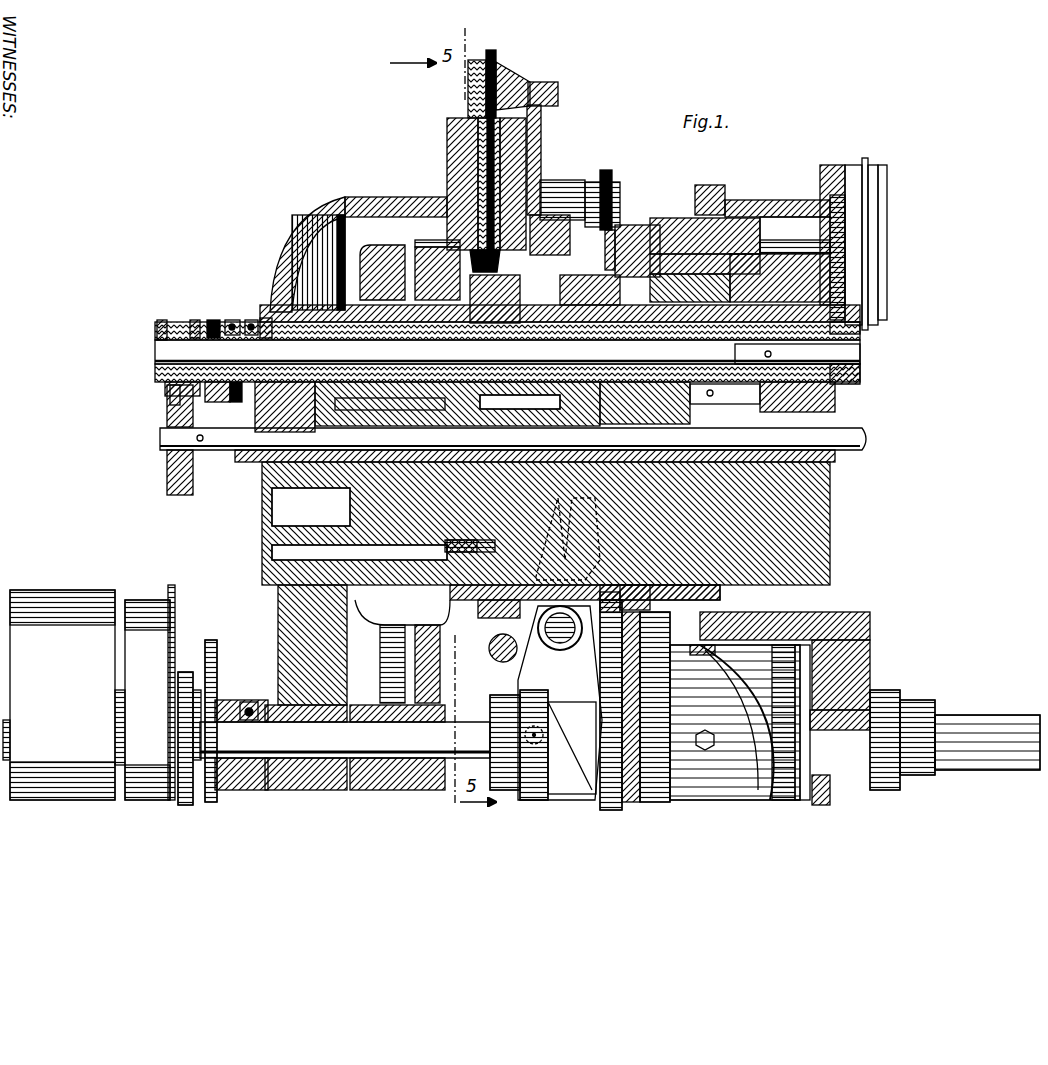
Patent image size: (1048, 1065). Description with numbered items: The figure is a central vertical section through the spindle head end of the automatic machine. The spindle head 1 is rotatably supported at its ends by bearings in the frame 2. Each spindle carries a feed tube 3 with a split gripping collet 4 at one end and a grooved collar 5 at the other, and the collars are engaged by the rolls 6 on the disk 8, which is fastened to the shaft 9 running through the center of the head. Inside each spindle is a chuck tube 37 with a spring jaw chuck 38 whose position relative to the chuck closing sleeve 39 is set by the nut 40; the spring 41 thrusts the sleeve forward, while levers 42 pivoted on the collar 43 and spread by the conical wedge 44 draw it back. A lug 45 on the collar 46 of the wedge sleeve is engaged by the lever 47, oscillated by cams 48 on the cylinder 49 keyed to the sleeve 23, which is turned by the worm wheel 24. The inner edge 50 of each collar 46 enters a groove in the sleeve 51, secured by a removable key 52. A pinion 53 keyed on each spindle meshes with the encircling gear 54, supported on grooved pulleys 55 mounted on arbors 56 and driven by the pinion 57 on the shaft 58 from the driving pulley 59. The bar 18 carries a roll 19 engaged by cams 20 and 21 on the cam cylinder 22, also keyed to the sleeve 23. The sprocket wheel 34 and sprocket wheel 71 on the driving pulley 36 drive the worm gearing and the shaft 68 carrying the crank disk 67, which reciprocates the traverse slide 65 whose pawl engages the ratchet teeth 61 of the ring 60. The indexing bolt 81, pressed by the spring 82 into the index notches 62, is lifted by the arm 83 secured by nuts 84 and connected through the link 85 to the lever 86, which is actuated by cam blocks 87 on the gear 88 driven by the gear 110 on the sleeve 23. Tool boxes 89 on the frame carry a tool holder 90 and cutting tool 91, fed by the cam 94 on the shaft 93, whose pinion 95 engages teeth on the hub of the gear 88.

The spindle head 1 is at (815, 520).
The frame 2 is at (300, 240).
The feed tube 3 is at (155, 354).
The split gripping collet 4 is at (840, 390).
The grooved collar 5 is at (190, 320).
The rolls 6 is at (165, 388).
The disk 8 is at (167, 470).
The shaft 9 is at (162, 438).
The bar 18 is at (855, 612).
The roll 19 is at (695, 670).
The cam 20 is at (701, 727).
The cam 21 is at (781, 722).
The cam cylinder 22 is at (737, 722).
The sleeve 23 is at (940, 712).
The worm wheel 24 is at (660, 610).
The sprocket wheel 34 is at (212, 642).
The driving pulley 36 is at (142, 700).
The chuck tube 37 is at (213, 318).
The spring jaw chuck 38 is at (860, 354).
The chuck closing sleeve 39 is at (862, 372).
The nut 40 is at (232, 318).
The spring 41 is at (655, 300).
The levers 42 is at (690, 300).
The collar 43 is at (700, 395).
The conical wedge 44 is at (685, 410).
The lug 45 is at (575, 272).
The collar 46 is at (575, 300).
The lever 47 is at (560, 619).
The cams 48 is at (572, 748).
The cylinder 49 is at (560, 703).
The inner edge 50 is at (608, 465).
The sleeve 51 is at (540, 520).
The removable key 52 is at (255, 410).
The pinion 53 is at (372, 258).
The gear 54 is at (420, 250).
The grooved pulleys 55 is at (350, 500).
The arbors 56 is at (330, 540).
The pinion 57 is at (380, 670).
The shaft 58 is at (262, 700).
The driving pulley 59 is at (59, 695).
The ring 60 is at (492, 598).
The ratchet teeth 61 is at (503, 644).
The index notches 62 is at (490, 652).
The traverse slide 65 is at (492, 680).
The crank disk 67 is at (612, 592).
The shaft 68 is at (640, 585).
The sprocket wheel 71 is at (185, 672).
The indexing bolt 81 is at (447, 200).
The spring 82 is at (447, 150).
The arm 83 is at (510, 92).
The nuts 84 is at (468, 90).
The link 85 is at (540, 145).
The lever 86 is at (567, 185).
The cam blocks 87 is at (605, 190).
The gear 88 is at (635, 225).
The tool boxes 89 is at (832, 165).
The tool holder 90 is at (880, 240).
The cutting tool 91 is at (862, 334).
The shaft 93 is at (770, 210).
The cam 94 is at (868, 254).
The pinion 95 is at (715, 185).
The gear 110 is at (563, 731).